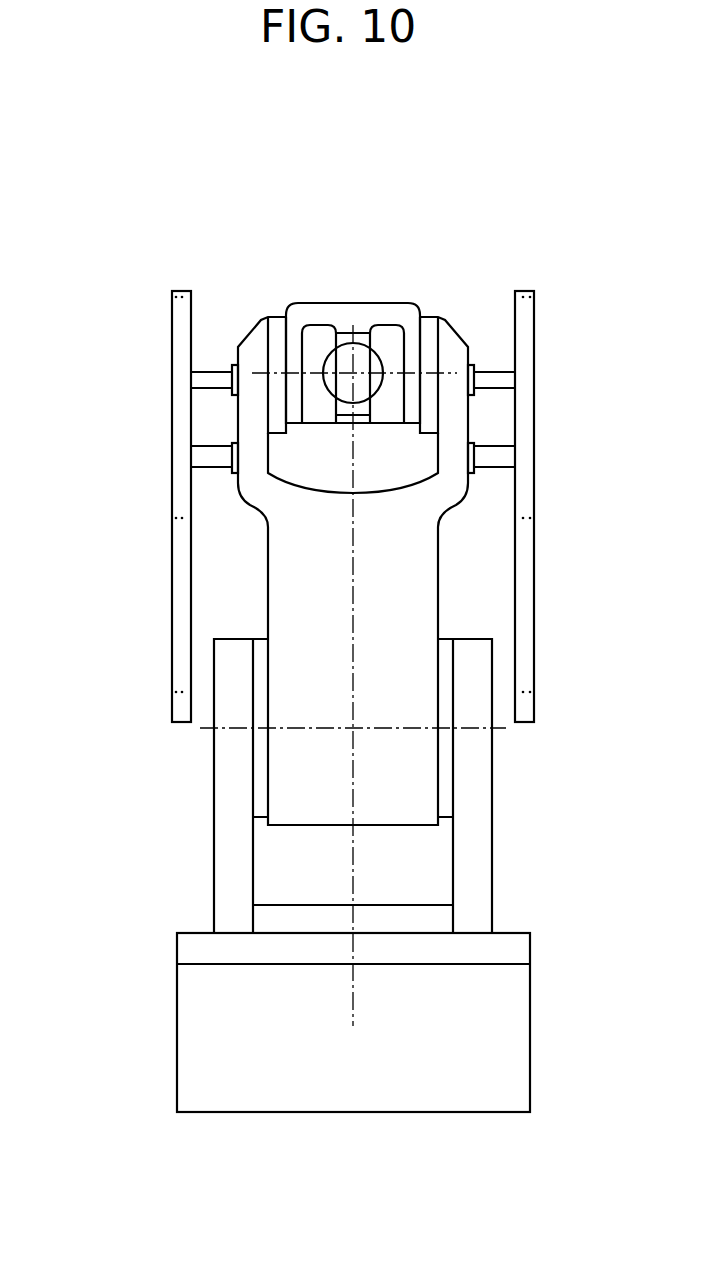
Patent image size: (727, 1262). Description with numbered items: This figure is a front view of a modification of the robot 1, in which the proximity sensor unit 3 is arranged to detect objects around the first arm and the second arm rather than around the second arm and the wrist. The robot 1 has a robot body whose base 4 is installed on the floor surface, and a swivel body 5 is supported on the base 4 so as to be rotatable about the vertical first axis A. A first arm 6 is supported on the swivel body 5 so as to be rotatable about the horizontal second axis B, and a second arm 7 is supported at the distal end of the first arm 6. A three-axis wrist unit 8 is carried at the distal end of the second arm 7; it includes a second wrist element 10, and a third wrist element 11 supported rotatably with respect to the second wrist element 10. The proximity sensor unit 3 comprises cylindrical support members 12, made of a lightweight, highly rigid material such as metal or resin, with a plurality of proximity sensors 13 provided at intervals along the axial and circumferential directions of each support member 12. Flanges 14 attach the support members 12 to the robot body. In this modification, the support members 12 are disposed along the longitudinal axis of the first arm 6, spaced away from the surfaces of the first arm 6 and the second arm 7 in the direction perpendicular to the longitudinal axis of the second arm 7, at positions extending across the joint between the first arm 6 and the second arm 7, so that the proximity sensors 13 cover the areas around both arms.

The robot 1 is at (84, 204).
The proximity sensor unit 3 is at (158, 354).
The base 4 is at (177, 1030).
The swivel body 5 is at (214, 805).
The first arm 6 is at (268, 570).
The second arm 7 is at (331, 290).
The wrist unit 8 is at (367, 320).
The second wrist element 10 is at (318, 327).
The third wrist element 11 is at (345, 338).
The support member 12 is at (172, 425).
The proximity sensors 13 is at (176, 692).
The flange 14 is at (232, 365).
The first axis A is at (353, 1005).
The second axis B is at (400, 728).